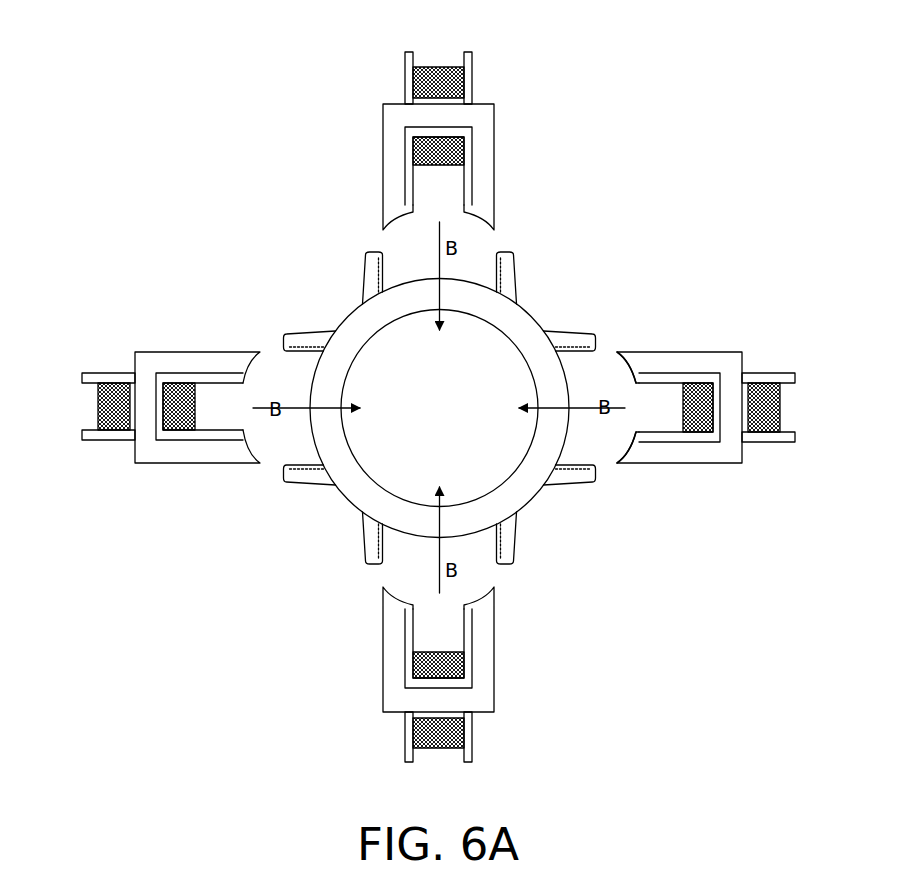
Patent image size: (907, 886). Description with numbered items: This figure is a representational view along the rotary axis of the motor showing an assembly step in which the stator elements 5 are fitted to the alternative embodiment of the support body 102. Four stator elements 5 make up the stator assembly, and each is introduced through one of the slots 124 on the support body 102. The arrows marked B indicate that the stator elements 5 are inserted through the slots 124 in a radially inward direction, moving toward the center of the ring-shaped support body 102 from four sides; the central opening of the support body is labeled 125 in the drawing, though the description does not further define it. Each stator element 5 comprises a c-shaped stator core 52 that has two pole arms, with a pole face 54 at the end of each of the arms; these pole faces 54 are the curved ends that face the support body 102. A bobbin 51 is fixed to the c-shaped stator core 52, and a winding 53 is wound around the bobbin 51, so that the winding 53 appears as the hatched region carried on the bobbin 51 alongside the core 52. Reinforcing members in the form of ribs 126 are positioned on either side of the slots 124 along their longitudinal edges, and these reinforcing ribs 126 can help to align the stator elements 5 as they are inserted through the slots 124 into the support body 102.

The stator element 5 is at (467, 407).
The bobbin 51 is at (775, 442).
The c-shaped stator core 52 is at (684, 455).
The winding 53 is at (778, 413).
The pole face 54 is at (625, 368).
The support body 102 is at (307, 533).
The slot 124 is at (308, 450).
The central bore 125 is at (385, 380).
The rib 126 is at (563, 477).